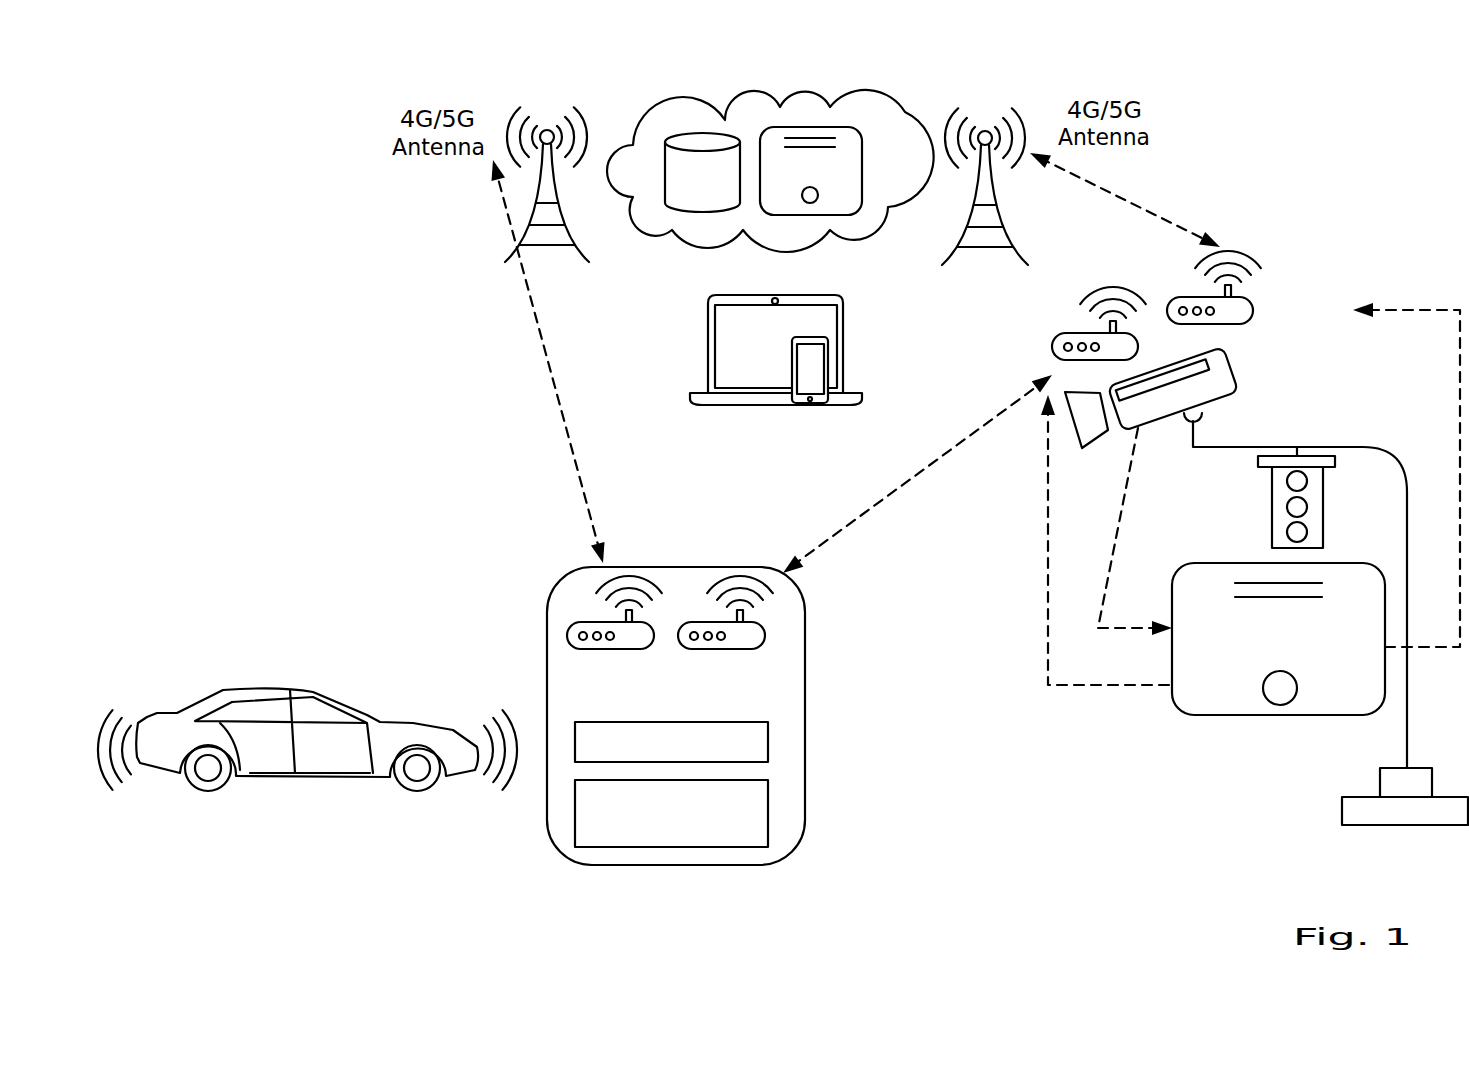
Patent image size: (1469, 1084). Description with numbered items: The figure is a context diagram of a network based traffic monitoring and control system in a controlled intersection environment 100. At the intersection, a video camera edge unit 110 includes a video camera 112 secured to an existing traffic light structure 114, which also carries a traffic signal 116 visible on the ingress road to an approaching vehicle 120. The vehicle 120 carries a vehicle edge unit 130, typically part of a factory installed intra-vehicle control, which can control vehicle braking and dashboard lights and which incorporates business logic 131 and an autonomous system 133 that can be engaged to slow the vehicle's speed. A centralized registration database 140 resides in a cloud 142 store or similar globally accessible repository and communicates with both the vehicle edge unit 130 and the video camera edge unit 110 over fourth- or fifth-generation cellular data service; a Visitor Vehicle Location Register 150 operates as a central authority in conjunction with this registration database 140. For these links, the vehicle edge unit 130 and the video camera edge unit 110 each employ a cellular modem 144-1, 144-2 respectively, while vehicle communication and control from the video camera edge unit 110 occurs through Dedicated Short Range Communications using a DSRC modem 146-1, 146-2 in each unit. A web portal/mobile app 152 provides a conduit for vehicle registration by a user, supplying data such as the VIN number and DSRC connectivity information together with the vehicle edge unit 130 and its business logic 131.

The controlled intersection environment 100 is at (285, 332).
The video camera edge unit 110 is at (1180, 713).
The video camera 112 is at (1238, 372).
The traffic light structure 114 is at (1378, 447).
The traffic signal 116 is at (1272, 497).
The vehicle 120 is at (288, 690).
The vehicle edge unit 130 is at (807, 677).
The business logic 131 is at (768, 735).
The autonomous system 133 is at (768, 800).
The centralized registration database 140 is at (693, 132).
The cloud 142 is at (885, 92).
The 4G/5G modem 144-1 is at (567, 632).
The 4G/5G modem 144-2 is at (1173, 298).
The DSRC modem 146-1 is at (765, 632).
The DSRC modem 146-2 is at (1063, 334).
The Visitor Vehicle Location Register 150 is at (805, 127).
The web portal/mobile app 152 is at (708, 347).